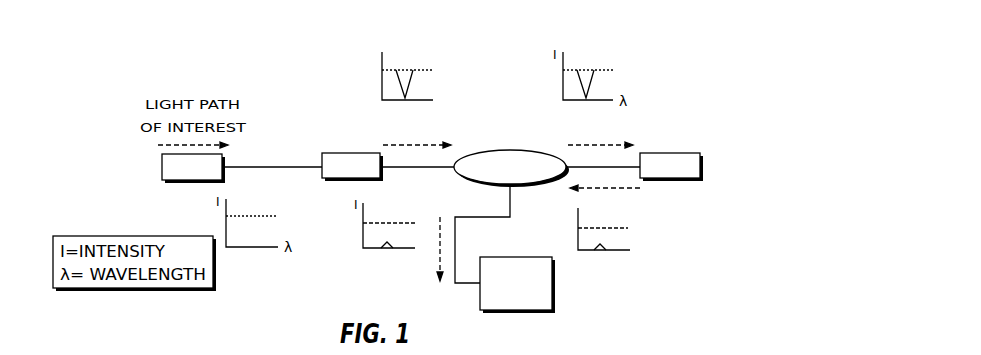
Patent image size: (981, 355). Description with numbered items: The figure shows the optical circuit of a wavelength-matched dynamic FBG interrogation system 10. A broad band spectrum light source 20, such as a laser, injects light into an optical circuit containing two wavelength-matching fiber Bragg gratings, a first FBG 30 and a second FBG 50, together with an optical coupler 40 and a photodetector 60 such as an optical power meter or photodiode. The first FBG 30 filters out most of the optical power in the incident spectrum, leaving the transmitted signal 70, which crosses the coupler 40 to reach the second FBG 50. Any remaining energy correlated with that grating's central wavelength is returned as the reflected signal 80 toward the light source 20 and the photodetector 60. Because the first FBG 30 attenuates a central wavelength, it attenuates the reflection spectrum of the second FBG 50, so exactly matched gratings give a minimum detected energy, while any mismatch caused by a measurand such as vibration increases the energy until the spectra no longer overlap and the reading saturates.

The FBG interrogation system 10 is at (240, 60).
The broad band spectrum light source 20 is at (162, 170).
The first FBG 30 is at (322, 160).
The optical coupler 40 is at (510, 150).
The second FBG 50 is at (668, 153).
The photodetector 60 is at (518, 257).
The transmitted signal 70 is at (382, 76).
The reflected signal 80 is at (615, 252).